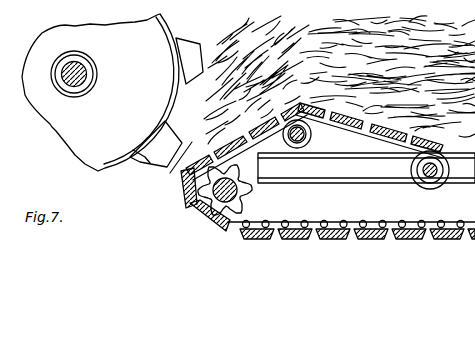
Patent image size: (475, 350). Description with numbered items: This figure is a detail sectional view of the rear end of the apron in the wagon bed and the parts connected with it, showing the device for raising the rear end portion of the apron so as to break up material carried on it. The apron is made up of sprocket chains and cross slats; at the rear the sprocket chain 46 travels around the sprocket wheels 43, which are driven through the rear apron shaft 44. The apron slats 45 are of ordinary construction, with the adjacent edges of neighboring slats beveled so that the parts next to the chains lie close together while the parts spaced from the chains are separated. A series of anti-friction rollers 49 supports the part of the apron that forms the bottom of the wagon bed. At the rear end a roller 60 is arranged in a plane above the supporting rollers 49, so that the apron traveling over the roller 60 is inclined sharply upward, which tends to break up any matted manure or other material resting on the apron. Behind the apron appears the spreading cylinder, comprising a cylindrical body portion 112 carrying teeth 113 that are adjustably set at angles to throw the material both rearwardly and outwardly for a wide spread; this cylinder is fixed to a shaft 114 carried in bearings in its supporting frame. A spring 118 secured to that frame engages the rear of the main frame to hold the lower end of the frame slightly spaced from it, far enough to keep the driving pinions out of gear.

The cylindrical body portion 112 is at (171, 9).
The teeth 113 is at (190, 53).
The shaft 114 is at (73, 66).
The spring 118 is at (162, 151).
The sprocket wheels 43 is at (200, 205).
The rear apron shaft 44 is at (242, 193).
The apron slats 45 is at (297, 237).
The conveyor chain 46 is at (335, 198).
The anti-friction rollers 49 is at (433, 190).
The roller 60 is at (315, 138).